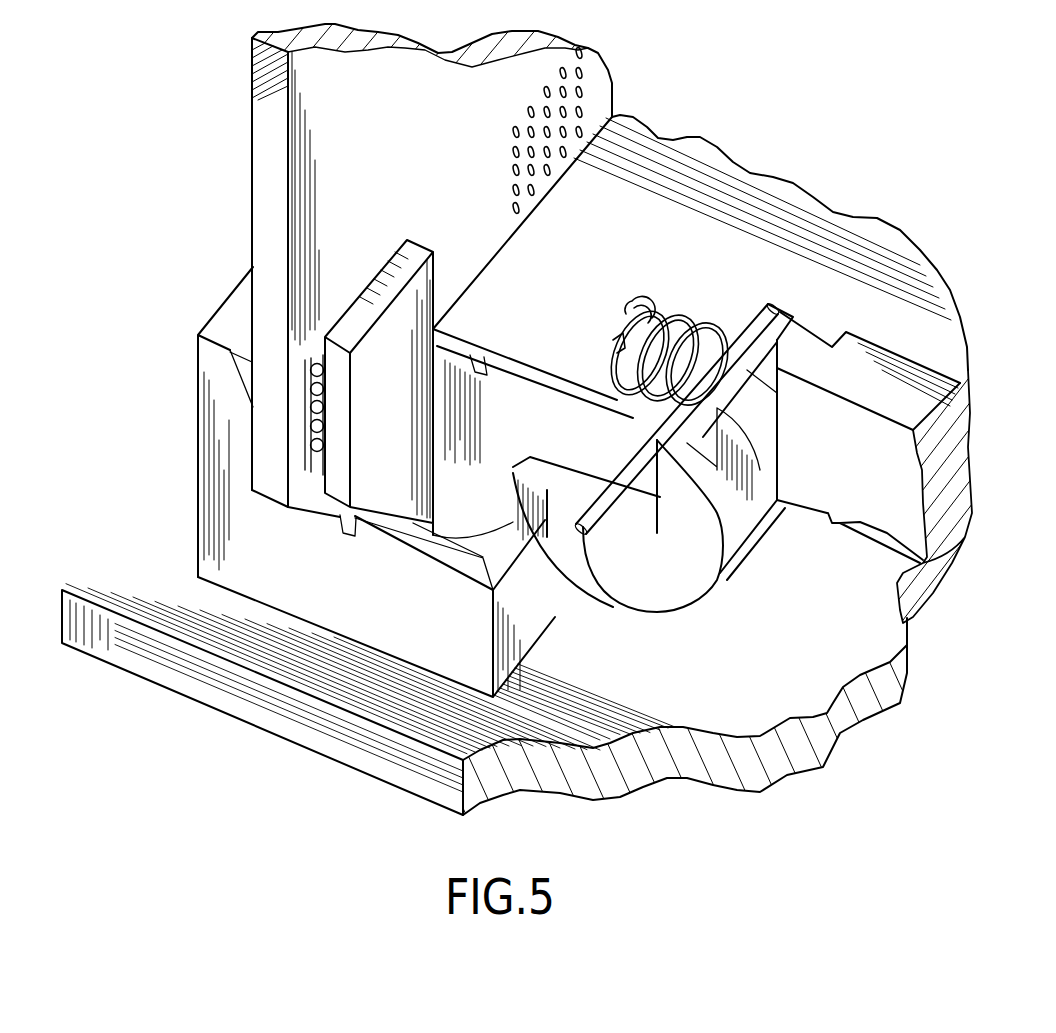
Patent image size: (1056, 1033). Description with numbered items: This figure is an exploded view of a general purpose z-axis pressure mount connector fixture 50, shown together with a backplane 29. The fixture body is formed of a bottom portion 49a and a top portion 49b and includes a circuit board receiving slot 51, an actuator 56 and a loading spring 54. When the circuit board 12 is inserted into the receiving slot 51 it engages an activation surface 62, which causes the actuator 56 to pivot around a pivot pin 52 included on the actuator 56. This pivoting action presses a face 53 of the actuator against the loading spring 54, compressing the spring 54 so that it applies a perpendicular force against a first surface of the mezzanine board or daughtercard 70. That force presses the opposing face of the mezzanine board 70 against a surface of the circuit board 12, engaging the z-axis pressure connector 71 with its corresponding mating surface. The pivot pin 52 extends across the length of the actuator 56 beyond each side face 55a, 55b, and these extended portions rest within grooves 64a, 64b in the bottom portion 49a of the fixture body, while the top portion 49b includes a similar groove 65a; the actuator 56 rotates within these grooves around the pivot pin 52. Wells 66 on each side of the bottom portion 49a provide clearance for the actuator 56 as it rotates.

The circuit board 12 is at (267, 148).
The backplane 29 is at (102, 575).
The bottom portion of the connector fixture body 49a is at (210, 330).
The top portion of the connector fixture body 49b is at (910, 400).
The connector fixture 50 is at (255, 573).
The circuit board receiving slot 51 is at (244, 350).
The pivot pin 52 is at (584, 532).
The face 53 is at (738, 337).
The loading spring 54 is at (656, 306).
The side face of the actuator 55a is at (687, 578).
The side face of the actuator 55b is at (780, 322).
The actuator 56 is at (773, 432).
The activation surface 62 is at (533, 470).
The groove 64a is at (347, 529).
The groove 64b is at (477, 357).
The groove 65a is at (925, 567).
The wells 66 is at (473, 483).
The mezzanine board 70 is at (343, 330).
The z-axis pressure connector 71 is at (303, 417).